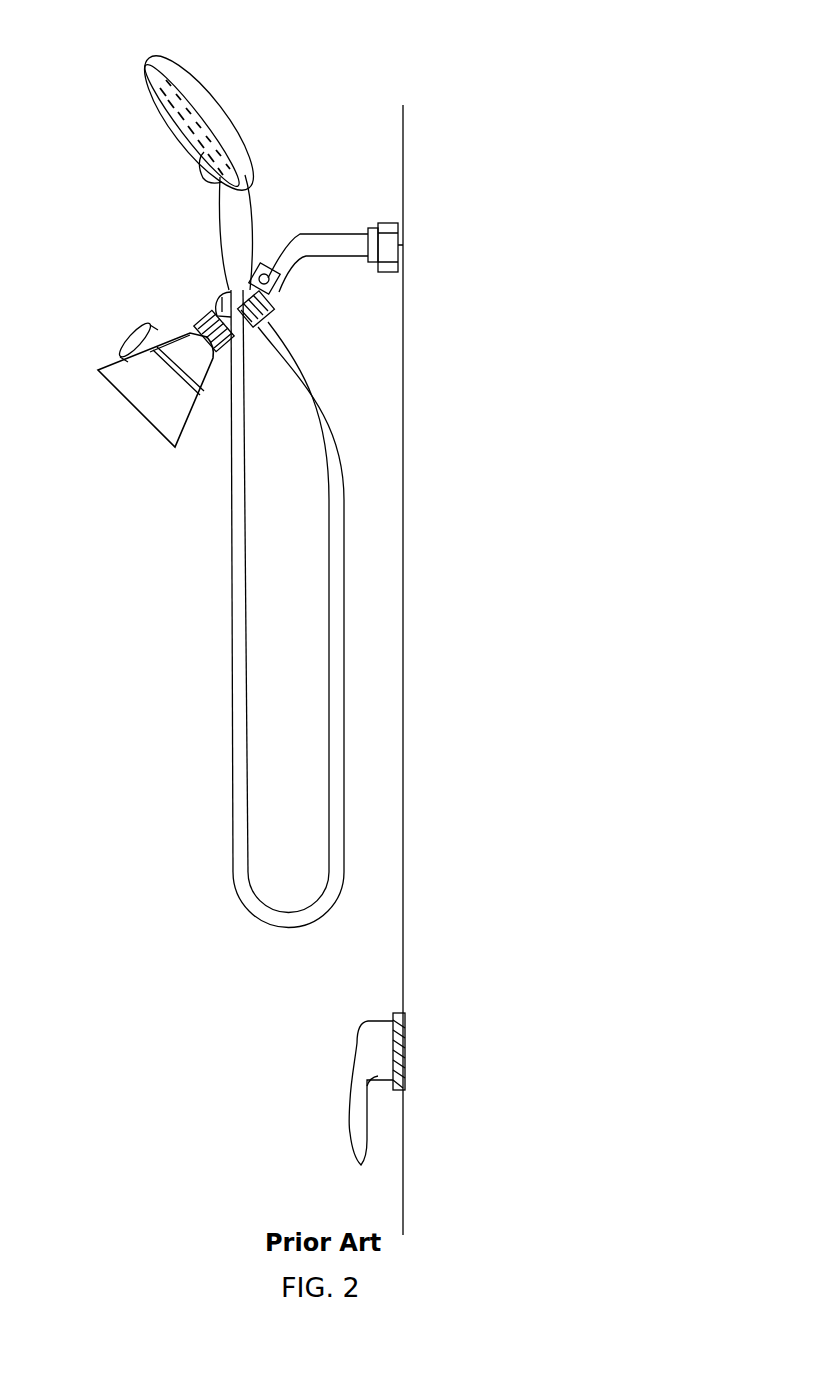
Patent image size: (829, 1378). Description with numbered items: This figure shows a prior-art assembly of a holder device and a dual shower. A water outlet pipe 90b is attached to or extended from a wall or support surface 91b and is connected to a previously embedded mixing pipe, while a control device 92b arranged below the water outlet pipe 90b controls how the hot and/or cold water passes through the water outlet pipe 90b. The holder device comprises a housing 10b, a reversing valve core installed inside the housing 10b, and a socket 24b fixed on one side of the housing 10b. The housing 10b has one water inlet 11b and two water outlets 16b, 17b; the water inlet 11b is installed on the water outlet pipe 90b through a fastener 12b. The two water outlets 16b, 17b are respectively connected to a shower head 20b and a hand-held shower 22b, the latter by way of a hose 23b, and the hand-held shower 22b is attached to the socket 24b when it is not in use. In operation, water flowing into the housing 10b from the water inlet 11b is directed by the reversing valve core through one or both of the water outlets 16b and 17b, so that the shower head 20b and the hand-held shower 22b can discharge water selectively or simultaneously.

The housing 10b is at (227, 289).
The water inlet 11b is at (266, 300).
The fastener 12b is at (262, 267).
The water outlet 16b is at (212, 320).
The water outlet 17b is at (255, 333).
The shower head 20b is at (140, 397).
The hand-held shower 22b is at (211, 112).
The hose 23b is at (242, 622).
The socket 24b is at (227, 291).
The water outlet pipe 90b is at (321, 233).
The wall or support surface 91b is at (406, 126).
The control device 92b is at (360, 1053).